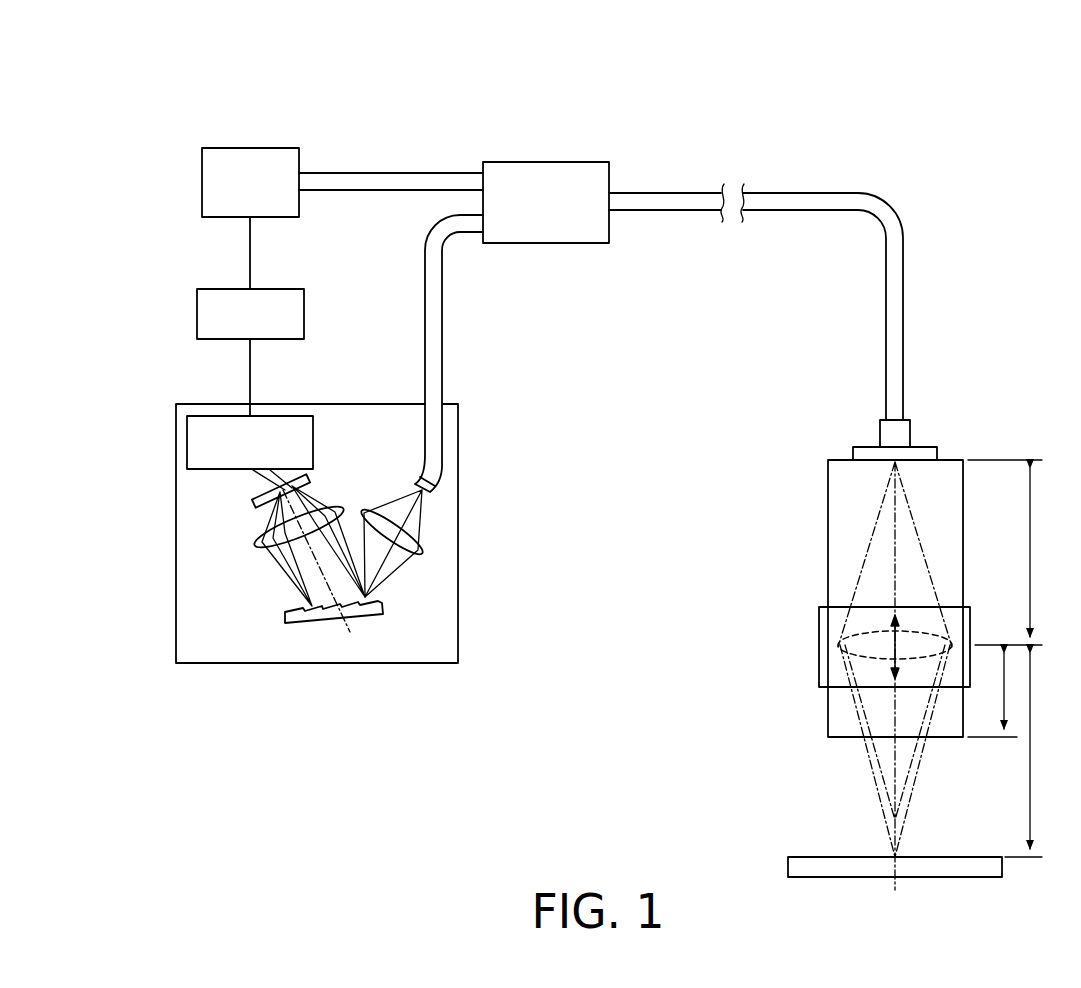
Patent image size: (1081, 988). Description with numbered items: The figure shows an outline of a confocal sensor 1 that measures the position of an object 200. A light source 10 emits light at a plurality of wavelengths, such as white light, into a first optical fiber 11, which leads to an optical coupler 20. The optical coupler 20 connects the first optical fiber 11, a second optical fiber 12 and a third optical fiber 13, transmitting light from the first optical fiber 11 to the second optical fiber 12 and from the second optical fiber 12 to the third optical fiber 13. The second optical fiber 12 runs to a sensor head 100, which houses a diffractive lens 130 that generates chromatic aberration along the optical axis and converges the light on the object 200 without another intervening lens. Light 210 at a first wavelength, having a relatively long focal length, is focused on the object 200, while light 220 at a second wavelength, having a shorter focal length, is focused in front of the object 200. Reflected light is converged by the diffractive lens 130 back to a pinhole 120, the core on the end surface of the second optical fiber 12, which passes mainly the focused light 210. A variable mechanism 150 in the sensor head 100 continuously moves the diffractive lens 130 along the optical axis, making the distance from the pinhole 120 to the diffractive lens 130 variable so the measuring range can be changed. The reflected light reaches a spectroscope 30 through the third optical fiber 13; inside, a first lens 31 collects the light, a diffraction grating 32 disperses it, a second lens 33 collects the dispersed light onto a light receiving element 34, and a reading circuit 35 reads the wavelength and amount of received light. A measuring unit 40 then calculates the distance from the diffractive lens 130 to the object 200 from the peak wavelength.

The confocal sensor 1 is at (927, 74).
The light source 10 is at (247, 148).
The first optical fiber 11 is at (387, 173).
The second optical fiber 12 is at (840, 193).
The third optical fiber 13 is at (443, 330).
The optical coupler 20 is at (548, 162).
The spectroscope 30 is at (340, 404).
The first lens 31 is at (422, 555).
The diffraction grating 32 is at (383, 616).
The second lens 33 is at (263, 548).
The light receiving element 34 is at (253, 503).
The reading circuit 35 is at (187, 442).
The measuring unit 40 is at (197, 315).
The sensor head 100 is at (805, 438).
The pinhole 120 is at (888, 470).
The diffractive lens 130 is at (840, 656).
The variable mechanism 150 is at (819, 621).
The object 200 is at (788, 868).
The light at a first wavelength 210 is at (888, 826).
The light at a second wavelength 220 is at (882, 786).